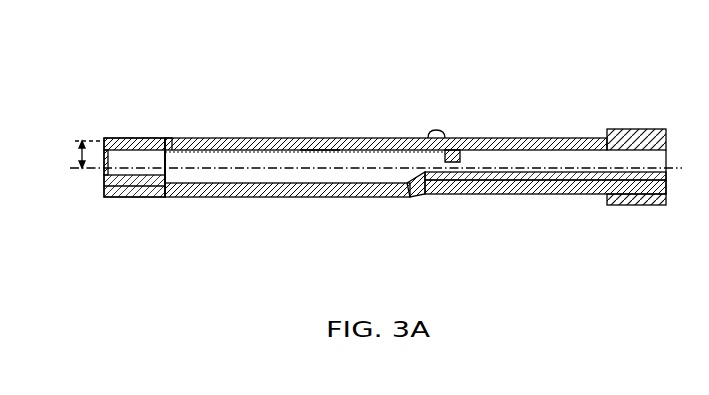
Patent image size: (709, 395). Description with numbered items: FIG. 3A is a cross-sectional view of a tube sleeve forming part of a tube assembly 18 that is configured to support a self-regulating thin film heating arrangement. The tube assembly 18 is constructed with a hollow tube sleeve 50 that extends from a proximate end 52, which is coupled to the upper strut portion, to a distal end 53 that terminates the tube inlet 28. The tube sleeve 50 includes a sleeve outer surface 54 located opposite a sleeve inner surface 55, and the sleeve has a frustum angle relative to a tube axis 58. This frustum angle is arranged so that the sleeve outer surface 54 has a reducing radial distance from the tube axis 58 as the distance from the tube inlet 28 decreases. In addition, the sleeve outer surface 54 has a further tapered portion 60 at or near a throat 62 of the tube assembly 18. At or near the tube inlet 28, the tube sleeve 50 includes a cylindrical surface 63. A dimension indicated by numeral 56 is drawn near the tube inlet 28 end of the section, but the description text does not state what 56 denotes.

The tube assembly 18 is at (503, 120).
The tube sleeve 50 is at (383, 138).
The sleeve outer surface 54 is at (276, 139).
The sleeve inner surface 55 is at (318, 149).
The tube axis 58 is at (252, 183).
The proximate end 52 is at (636, 205).
The cylindrical surface 63 is at (130, 138).
The tube inlet 28 is at (117, 138).
The distal end 53 is at (142, 182).
The throat 62 is at (165, 191).
The further tapered portion 60 is at (170, 141).
The wall thickness dimension 56 is at (82, 141).